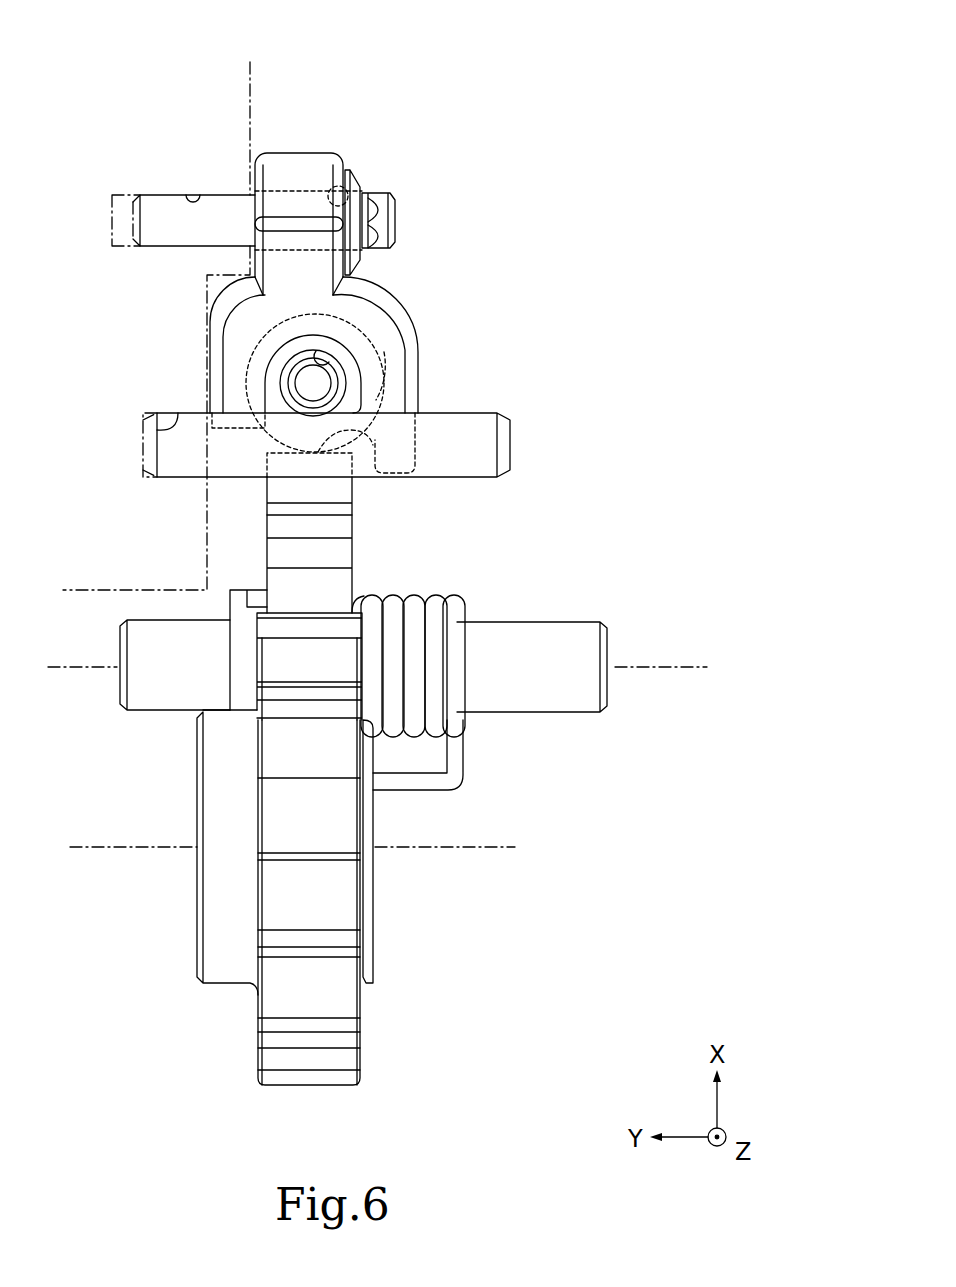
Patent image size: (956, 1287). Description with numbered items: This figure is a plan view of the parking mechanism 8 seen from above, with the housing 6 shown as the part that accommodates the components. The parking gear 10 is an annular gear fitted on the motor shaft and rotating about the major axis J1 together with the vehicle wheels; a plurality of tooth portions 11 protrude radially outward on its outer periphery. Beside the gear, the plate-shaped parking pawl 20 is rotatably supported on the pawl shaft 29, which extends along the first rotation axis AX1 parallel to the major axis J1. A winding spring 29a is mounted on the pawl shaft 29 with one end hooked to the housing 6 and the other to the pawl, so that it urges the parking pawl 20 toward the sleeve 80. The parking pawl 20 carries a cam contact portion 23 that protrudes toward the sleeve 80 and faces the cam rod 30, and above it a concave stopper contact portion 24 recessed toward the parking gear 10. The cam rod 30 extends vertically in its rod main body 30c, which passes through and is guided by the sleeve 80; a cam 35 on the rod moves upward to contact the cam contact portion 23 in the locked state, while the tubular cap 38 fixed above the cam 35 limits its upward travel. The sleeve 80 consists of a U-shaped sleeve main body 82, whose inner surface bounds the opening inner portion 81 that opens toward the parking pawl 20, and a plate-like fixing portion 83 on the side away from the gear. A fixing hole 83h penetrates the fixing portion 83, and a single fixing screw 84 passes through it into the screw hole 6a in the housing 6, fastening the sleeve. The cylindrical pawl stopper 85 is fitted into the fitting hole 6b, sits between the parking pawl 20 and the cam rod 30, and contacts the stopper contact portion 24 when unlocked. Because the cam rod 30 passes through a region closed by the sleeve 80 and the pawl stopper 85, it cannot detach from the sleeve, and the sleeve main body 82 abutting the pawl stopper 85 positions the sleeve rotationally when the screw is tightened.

The housing 6 is at (256, 63).
The screw hole 6a is at (185, 197).
The fitting hole 6b is at (150, 432).
The parking mechanism 8 is at (585, 66).
The parking gear 10 is at (372, 1058).
The tooth portion 11 is at (340, 822).
The parking pawl 20 is at (365, 557).
The cam contact portion 23 is at (405, 474).
The stopper contact portion 24 is at (321, 515).
The pawl shaft 29 is at (577, 706).
The winding spring 29a is at (458, 610).
The cam rod 30 is at (348, 370).
The rod main body 30c is at (320, 387).
The cam 35 is at (386, 362).
The tubular cap 38 is at (346, 388).
The sleeve 80 is at (343, 243).
The opening inner portion 81 is at (350, 365).
The sleeve main body 82 is at (388, 288).
The fixing portion 83 is at (300, 153).
The fixing hole 83h is at (352, 193).
The fixing screw 84 is at (393, 200).
The pawl stopper 85 is at (515, 442).
The first rotation axis AX1 is at (693, 667).
The major axis J1 is at (508, 847).